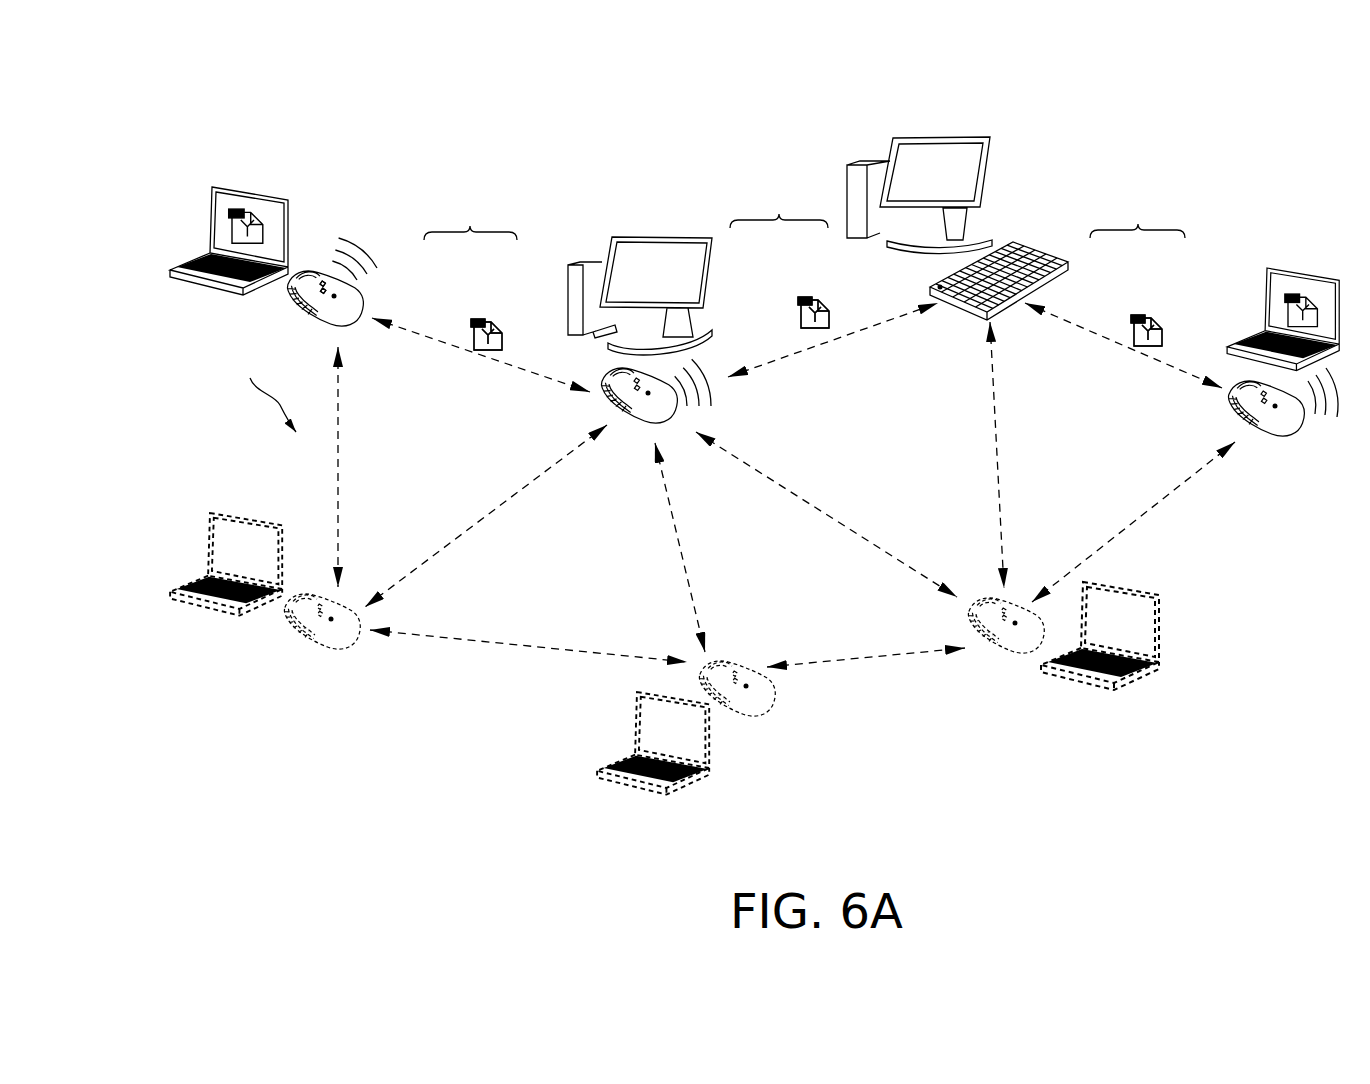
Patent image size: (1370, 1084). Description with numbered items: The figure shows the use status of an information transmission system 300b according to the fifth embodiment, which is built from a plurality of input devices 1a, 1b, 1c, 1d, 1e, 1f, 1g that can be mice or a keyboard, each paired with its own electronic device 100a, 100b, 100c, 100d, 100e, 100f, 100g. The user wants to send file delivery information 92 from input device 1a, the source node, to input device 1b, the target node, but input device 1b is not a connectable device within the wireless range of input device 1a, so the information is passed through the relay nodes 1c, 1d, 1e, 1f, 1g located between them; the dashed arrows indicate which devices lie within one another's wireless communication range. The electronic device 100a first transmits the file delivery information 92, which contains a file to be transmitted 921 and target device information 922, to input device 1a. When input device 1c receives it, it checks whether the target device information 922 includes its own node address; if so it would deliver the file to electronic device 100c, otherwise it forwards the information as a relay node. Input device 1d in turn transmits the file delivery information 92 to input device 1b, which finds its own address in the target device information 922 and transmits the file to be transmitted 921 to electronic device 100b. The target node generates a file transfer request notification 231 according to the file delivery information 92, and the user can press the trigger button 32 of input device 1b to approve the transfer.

The electronic device 100a is at (1270, 270).
The electronic device 100b is at (214, 194).
The electronic device 100c is at (942, 139).
The host computer 100d is at (662, 238).
The host computer 100e is at (214, 516).
The host computer 100f is at (640, 756).
The host computer 100g is at (1160, 636).
The input device 1a is at (1288, 426).
The input device 1b is at (350, 318).
The input device 1c is at (1013, 244).
The input device 1d is at (662, 418).
The input device 1e is at (346, 641).
The input device 1f is at (762, 706).
The input device 1g is at (1027, 641).
The trigger button 32 is at (334, 296).
The file transfer request notification 231 is at (294, 283).
The file delivery information 92 is at (806, 265).
The file to be transmitted 921 is at (474, 320).
The target device information 922 is at (816, 323).
The information transmission system 300b is at (254, 390).